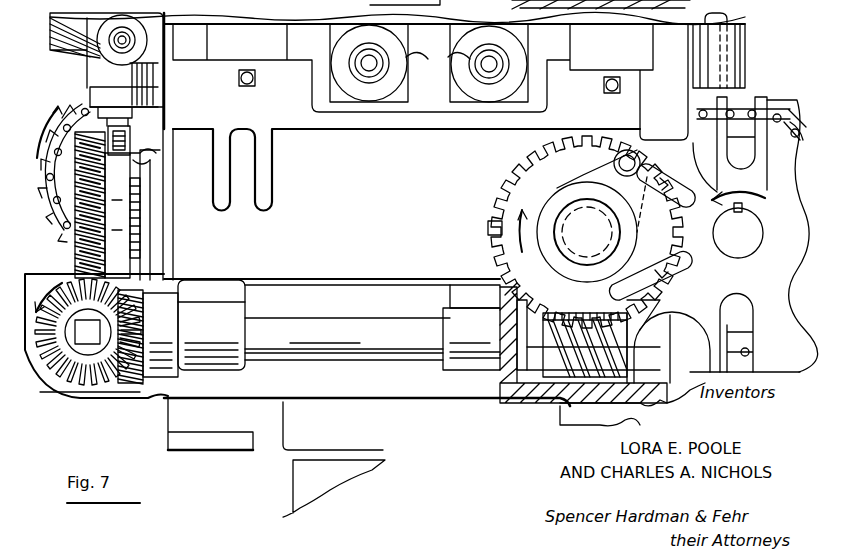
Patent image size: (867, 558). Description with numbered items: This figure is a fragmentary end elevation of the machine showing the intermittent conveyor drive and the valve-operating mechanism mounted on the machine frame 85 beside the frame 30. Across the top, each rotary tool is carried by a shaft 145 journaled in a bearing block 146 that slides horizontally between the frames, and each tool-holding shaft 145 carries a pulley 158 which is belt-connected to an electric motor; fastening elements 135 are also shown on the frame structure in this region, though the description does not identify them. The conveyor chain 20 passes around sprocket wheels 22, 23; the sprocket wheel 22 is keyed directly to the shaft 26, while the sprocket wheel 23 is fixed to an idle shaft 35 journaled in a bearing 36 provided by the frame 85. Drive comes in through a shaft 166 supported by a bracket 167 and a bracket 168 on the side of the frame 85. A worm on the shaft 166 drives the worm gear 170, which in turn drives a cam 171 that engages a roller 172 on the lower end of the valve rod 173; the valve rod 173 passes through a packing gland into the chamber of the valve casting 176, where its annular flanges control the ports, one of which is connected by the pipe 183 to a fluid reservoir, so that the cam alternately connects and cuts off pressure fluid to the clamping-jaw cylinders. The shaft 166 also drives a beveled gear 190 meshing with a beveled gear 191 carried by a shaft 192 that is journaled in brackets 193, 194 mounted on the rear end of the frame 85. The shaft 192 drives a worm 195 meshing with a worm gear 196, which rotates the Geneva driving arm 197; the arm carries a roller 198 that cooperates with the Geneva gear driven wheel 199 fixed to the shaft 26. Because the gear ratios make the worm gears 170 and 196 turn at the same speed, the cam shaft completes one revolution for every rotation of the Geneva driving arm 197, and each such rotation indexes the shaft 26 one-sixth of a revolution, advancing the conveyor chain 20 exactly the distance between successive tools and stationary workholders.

The chain 20 is at (60, 210).
The sprocket wheel 22 is at (795, 122).
The sprocket wheel 23 is at (55, 182).
The shaft 26 is at (735, 245).
The frame 30 is at (282, 440).
The idle shaft 35 is at (160, 154).
The bearing 36 is at (158, 138).
The machine frame 85 is at (370, 397).
The bolt 135 is at (247, 84).
The shaft 145 is at (492, 65).
The bearing block 146 is at (340, 102).
The pulley 158 is at (462, 56).
The shaft 166 is at (75, 382).
The bracket 167 is at (92, 400).
The bracket 168 is at (150, 402).
The worm gear 170 is at (78, 246).
The cam 171 is at (118, 212).
The roller 172 is at (127, 137).
The valve rod 173 is at (110, 120).
The valve casting 176 is at (80, 44).
The pipe 183 is at (120, 44).
The beveled gear 190 is at (84, 340).
The beveled gear 191 is at (122, 385).
The shaft 192 is at (290, 328).
The bracket 193 is at (220, 290).
The bracket 194 is at (505, 290).
The worm 195 is at (577, 315).
The worm gear 196 is at (520, 175).
The Geneva driving arm 197 is at (583, 175).
The roller 198 is at (642, 163).
The Geneva gear driven wheel 199 is at (743, 97).